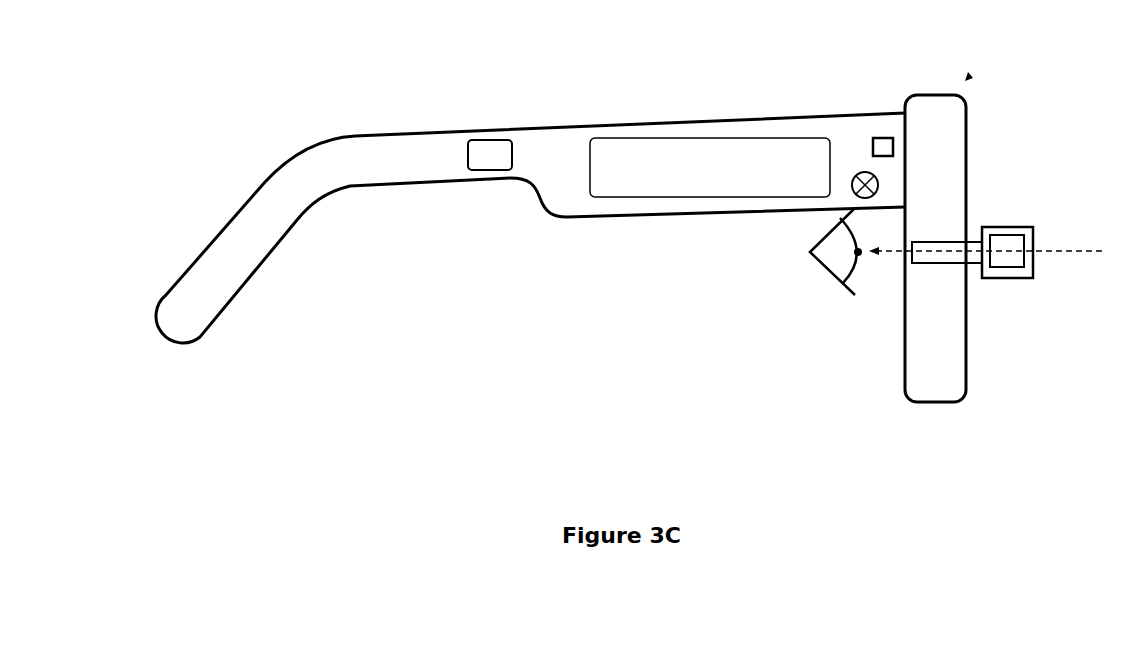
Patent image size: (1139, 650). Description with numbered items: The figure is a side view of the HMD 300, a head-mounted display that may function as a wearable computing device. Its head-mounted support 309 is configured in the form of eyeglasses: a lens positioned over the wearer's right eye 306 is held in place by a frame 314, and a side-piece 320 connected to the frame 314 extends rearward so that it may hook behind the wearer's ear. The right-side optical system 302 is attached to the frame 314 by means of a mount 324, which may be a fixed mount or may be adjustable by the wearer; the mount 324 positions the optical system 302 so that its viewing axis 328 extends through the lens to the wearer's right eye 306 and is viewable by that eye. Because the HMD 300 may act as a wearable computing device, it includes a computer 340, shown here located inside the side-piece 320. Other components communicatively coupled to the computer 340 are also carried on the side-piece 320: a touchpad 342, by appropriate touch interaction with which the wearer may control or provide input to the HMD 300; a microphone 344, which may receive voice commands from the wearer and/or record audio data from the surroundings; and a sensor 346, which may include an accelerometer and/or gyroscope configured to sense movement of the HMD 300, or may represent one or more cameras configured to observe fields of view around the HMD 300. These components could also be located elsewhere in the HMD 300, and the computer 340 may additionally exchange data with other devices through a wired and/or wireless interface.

The HMD 300 is at (609, 403).
The right-side optical system 302 is at (1035, 265).
The right eye 306 is at (842, 287).
The head-mounted support 309 is at (967, 78).
The frame 314 is at (928, 402).
The side-piece 320 is at (315, 200).
The mount 324 is at (933, 265).
The viewing axis 328 is at (1092, 248).
The computer 340 is at (493, 138).
The touchpad 342 is at (685, 138).
The microphone 344 is at (862, 172).
The sensor 346 is at (890, 136).